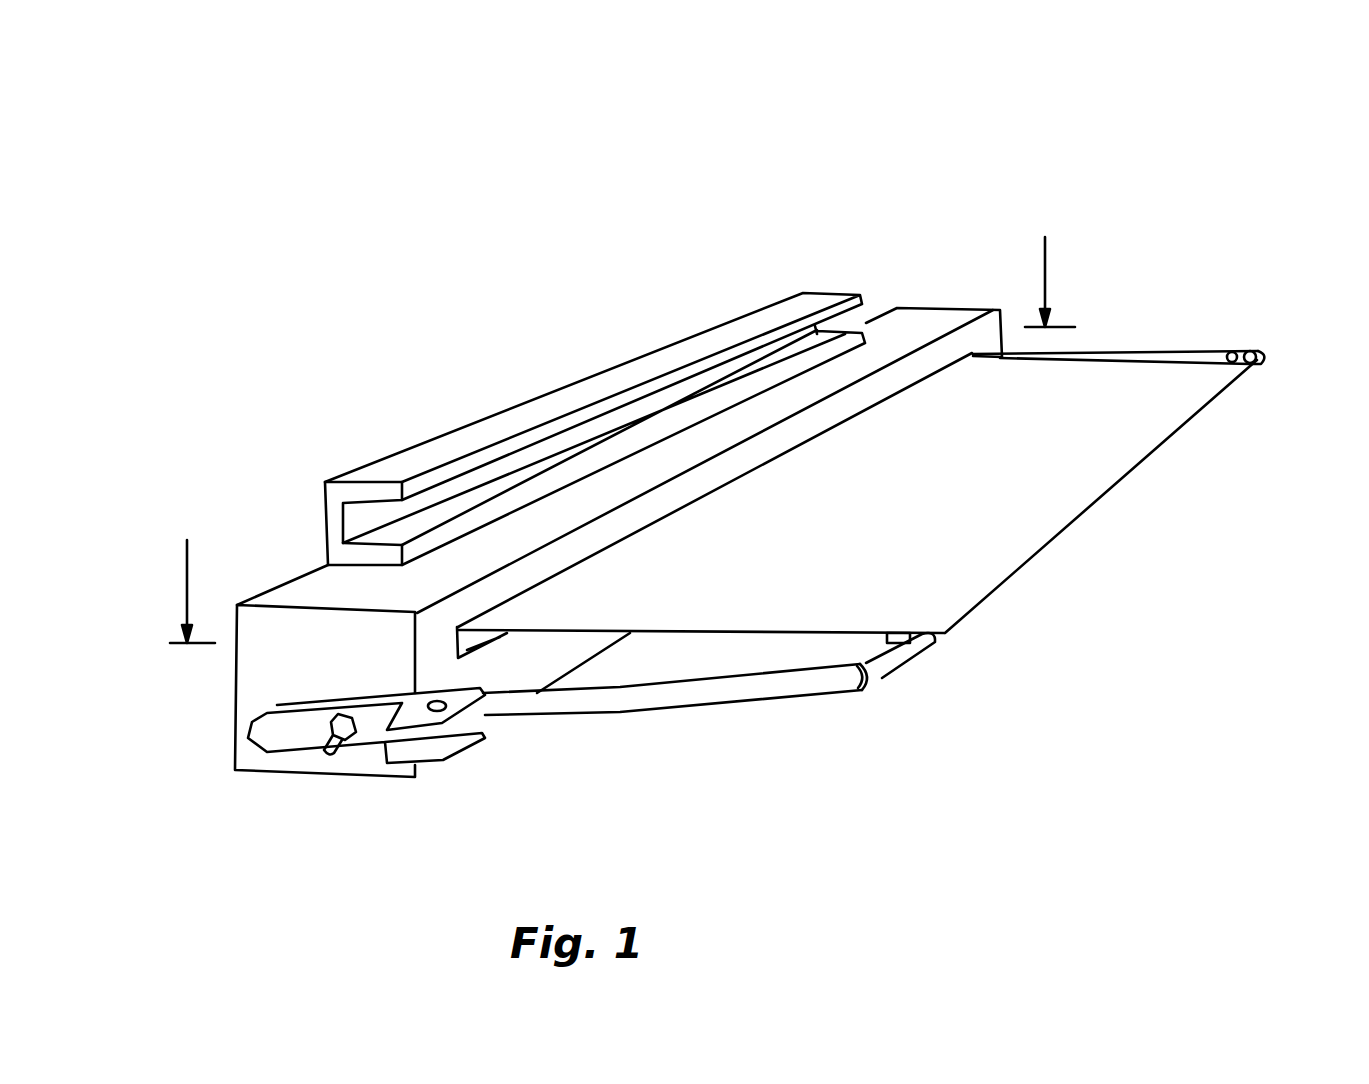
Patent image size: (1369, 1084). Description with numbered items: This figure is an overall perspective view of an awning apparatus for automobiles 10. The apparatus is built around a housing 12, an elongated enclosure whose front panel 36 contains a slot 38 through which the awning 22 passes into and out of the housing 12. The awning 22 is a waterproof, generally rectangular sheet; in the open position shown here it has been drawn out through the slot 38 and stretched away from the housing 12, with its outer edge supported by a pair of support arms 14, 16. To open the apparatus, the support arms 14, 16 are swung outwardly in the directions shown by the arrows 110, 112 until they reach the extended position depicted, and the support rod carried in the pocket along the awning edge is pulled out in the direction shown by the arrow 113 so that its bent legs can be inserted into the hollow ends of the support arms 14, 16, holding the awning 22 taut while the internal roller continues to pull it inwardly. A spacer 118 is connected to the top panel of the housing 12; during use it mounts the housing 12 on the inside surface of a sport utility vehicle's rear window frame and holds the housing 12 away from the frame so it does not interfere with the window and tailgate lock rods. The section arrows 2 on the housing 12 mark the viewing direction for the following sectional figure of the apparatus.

The awning apparatus for automobiles 10 is at (920, 143).
The housing 12 is at (908, 317).
The support arm 14 is at (740, 697).
The support arm 16 is at (1182, 350).
The awning 22 is at (990, 554).
The front panel 36 is at (957, 343).
The slot 38 is at (490, 645).
The arrow 110 is at (972, 663).
The arrow 112 is at (1300, 350).
The arrow 113 is at (1123, 518).
The spacer 118 is at (450, 433).
The section line 2- 2 is at (628, 440).